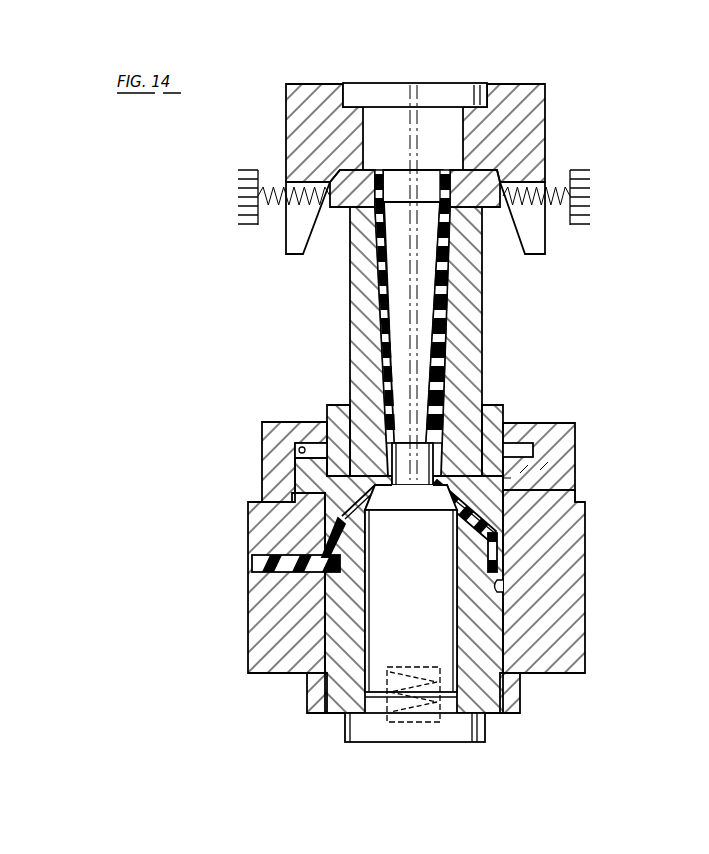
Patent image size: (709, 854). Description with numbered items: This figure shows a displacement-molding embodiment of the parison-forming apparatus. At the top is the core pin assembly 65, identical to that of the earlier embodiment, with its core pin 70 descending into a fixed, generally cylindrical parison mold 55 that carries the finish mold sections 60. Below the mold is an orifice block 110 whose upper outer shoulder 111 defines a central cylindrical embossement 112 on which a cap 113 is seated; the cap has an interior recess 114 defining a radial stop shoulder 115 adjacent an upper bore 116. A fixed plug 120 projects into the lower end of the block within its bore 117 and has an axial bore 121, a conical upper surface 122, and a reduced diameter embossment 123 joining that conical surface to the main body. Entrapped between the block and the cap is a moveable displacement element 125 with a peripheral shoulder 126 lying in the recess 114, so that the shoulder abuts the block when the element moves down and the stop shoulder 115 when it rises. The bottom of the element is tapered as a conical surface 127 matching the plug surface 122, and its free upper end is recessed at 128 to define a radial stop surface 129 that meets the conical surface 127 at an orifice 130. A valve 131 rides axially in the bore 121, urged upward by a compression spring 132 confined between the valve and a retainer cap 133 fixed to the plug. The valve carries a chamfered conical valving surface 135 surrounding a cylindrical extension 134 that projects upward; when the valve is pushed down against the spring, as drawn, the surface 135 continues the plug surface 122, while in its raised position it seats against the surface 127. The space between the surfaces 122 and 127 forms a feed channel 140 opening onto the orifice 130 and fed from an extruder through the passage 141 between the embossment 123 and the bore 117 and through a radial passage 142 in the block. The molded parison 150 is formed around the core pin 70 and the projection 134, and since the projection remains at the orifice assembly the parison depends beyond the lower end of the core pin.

The parison mold 55 is at (484, 301).
The finish mold sections 60 is at (345, 201).
The core pin assembly 65 is at (547, 92).
The core pin 70 is at (420, 284).
The orifice block 110 is at (567, 560).
The upper outer shoulder 111 is at (573, 497).
The central cylindrical embossement 112 is at (506, 488).
The cap 113 is at (571, 426).
The interior recess 114 is at (556, 436).
The radial stop shoulder 115 is at (302, 448).
The upper bore 116 is at (338, 425).
The bore 117 is at (503, 590).
The fixed plug 120 is at (505, 690).
The axial bore 121 is at (370, 655).
The conical surface 122 is at (336, 523).
The reduced diameter embossment 123 is at (326, 578).
The displacement element 125 is at (500, 505).
The peripheral shoulder 126 is at (303, 470).
The conical surface 127 is at (350, 510).
The recess 128 is at (473, 410).
The radial stop surface 129 is at (540, 470).
The orifice 130 is at (520, 473).
The valve 131 is at (420, 611).
The compression spring 132 is at (430, 695).
The retainer cap 133 is at (357, 733).
The cylindrical extension 134 is at (412, 480).
The chamfered conical valving surface 135 is at (395, 498).
The feed channel 140 is at (485, 508).
The passage 141 is at (494, 565).
The radial passage 142 is at (252, 560).
The molded parison 150 is at (447, 337).